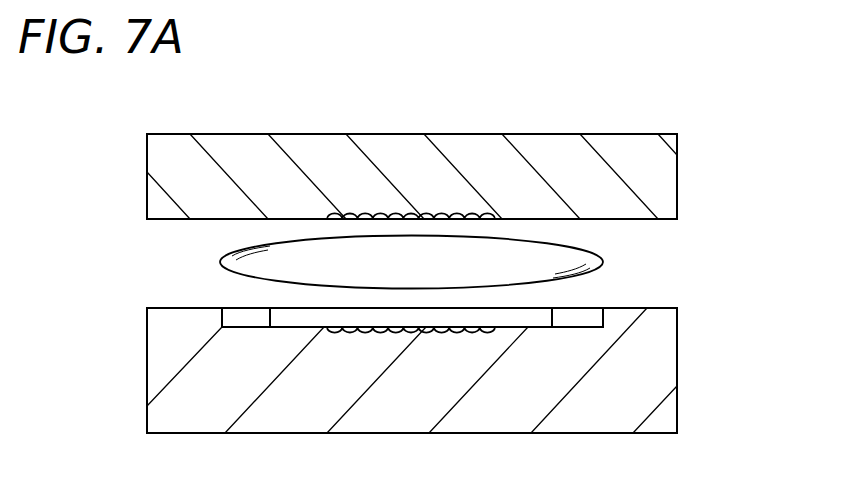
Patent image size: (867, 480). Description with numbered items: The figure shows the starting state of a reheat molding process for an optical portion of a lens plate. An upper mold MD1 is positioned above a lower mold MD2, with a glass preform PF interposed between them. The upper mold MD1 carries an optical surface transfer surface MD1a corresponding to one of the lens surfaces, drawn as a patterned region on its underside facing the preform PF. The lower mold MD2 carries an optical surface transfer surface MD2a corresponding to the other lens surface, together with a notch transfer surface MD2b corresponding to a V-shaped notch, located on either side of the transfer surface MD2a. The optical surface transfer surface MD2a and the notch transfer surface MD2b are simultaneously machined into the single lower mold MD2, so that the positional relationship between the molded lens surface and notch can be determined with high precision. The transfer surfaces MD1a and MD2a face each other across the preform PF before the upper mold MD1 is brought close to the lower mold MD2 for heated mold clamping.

The upper mold MD1 is at (677, 134).
The lower mold MD2 is at (677, 433).
The optical surface transfer surface MD1a is at (393, 217).
The optical surface transfer surface MD2a is at (357, 331).
The notch transfer surface MD2b is at (238, 321).
The glass preform PF is at (603, 262).